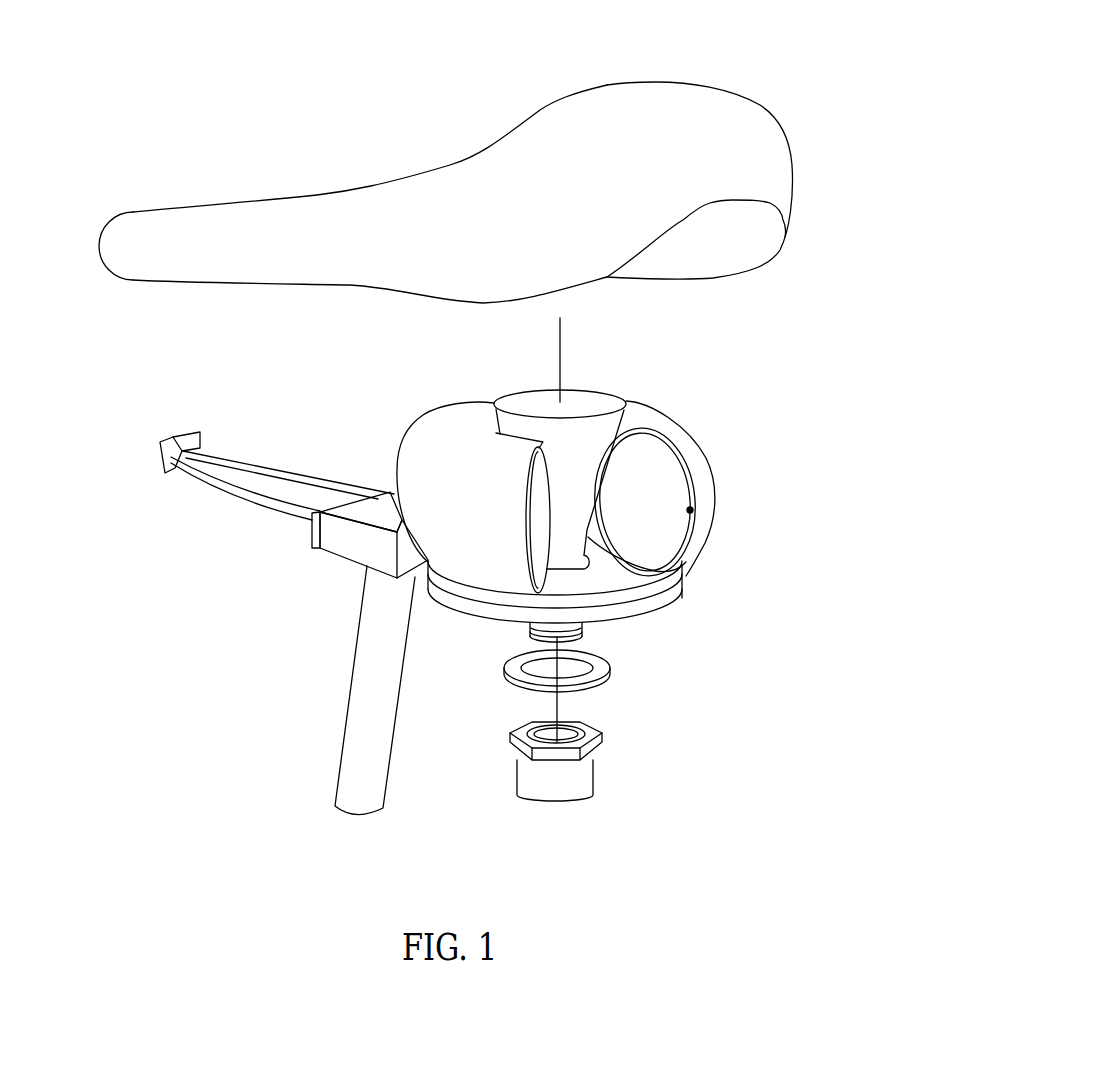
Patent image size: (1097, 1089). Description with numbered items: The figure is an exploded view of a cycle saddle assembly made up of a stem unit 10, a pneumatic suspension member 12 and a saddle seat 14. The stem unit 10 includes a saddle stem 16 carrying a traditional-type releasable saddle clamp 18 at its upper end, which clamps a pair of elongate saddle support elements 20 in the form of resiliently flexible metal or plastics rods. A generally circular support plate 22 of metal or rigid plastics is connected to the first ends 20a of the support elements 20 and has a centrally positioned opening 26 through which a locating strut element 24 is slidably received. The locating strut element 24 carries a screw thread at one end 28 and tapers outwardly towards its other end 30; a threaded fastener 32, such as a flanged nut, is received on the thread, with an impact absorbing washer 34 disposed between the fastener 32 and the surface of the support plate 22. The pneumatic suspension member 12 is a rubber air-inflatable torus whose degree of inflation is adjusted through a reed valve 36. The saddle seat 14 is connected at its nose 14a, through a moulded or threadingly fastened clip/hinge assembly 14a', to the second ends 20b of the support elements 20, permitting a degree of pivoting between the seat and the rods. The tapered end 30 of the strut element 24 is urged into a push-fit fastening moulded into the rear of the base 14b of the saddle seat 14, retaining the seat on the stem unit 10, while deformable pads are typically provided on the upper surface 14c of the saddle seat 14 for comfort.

The stem unit 10 is at (236, 614).
The pneumatic suspension member 12 is at (728, 487).
The saddle seat 14 is at (467, 186).
The nose 14a is at (105, 290).
The clip/hinge assembly 14a' is at (106, 478).
The base 14b is at (733, 247).
The upper surface 14c is at (660, 110).
The saddle stem 16 is at (373, 768).
The releasable saddle clamp 18 is at (377, 503).
The elongate saddle support elements 20 is at (222, 485).
The first ends 20a is at (423, 580).
The second ends 20b is at (177, 435).
The support plate 22 is at (681, 596).
The locating strut element 24 is at (582, 394).
The opening 26 is at (589, 567).
The threaded end 28 is at (583, 626).
The other end 30 is at (525, 400).
The threaded fastener 32 is at (588, 778).
The impact absorbing washer 34 is at (597, 690).
The reed valve 36 is at (692, 512).